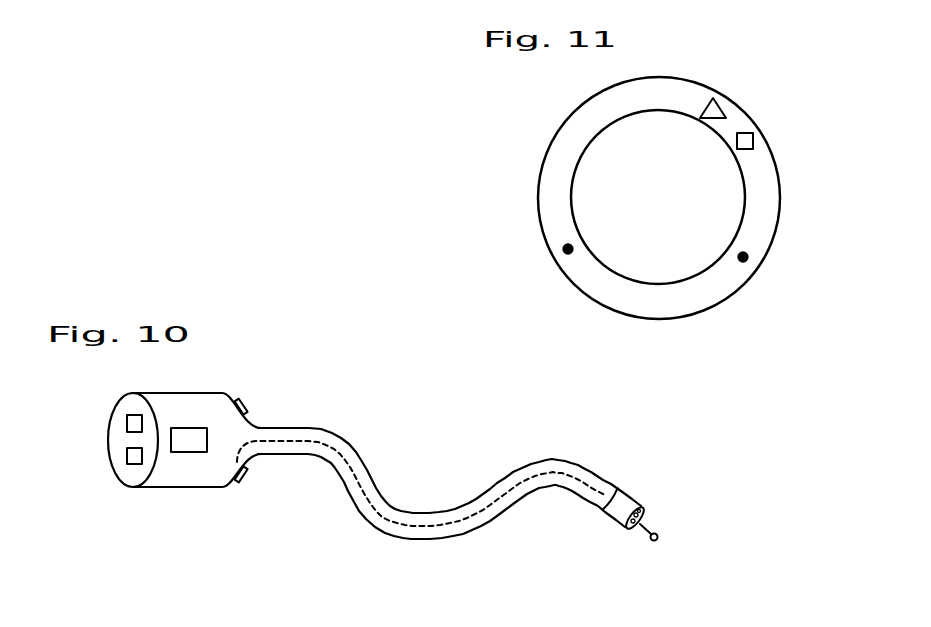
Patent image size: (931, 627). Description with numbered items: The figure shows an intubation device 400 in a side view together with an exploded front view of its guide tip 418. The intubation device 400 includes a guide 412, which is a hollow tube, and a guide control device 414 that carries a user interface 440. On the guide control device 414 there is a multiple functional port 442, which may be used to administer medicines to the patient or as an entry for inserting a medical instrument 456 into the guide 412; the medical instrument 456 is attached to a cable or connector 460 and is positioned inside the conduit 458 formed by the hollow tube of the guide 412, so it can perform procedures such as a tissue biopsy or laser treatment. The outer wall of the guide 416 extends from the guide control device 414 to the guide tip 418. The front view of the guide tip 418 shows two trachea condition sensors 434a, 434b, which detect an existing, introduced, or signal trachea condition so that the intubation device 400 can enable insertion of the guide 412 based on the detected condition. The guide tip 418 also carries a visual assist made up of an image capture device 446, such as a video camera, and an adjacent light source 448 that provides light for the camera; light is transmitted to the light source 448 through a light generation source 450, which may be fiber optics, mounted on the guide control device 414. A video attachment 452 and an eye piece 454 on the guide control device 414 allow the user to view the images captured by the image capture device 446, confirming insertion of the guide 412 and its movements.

In FIG. 10, the intubation device 400 is at (501, 406).
In FIG. 11, the intubation device 400 is at (754, 67).
In FIG. 10, the guide 412 is at (349, 435).
In FIG. 10, the guide control device 414 is at (181, 493).
In FIG. 10, the outer sheath 416 is at (413, 538).
In FIG. 10, the guide tip 418 is at (625, 503).
In FIG. 11, the guide tip 418 is at (564, 112).
In FIG. 11, the trachea condition sensor 434a is at (566, 252).
In FIG. 11, the trachea condition sensor 434b is at (745, 260).
In FIG. 10, the user interface 440 is at (187, 447).
In FIG. 10, the multiple functional port 442 is at (248, 475).
In FIG. 11, the image capture device 446 is at (753, 142).
In FIG. 11, the light source 448 is at (724, 109).
In FIG. 10, the light generation source 450 is at (248, 403).
In FIG. 10, the video attachment 452 is at (127, 423).
In FIG. 10, the eye piece 454 is at (127, 456).
In FIG. 10, the medical instrument 456 is at (658, 537).
In FIG. 11, the conduit 458 is at (627, 199).
In FIG. 10, the connector 460 is at (402, 522).